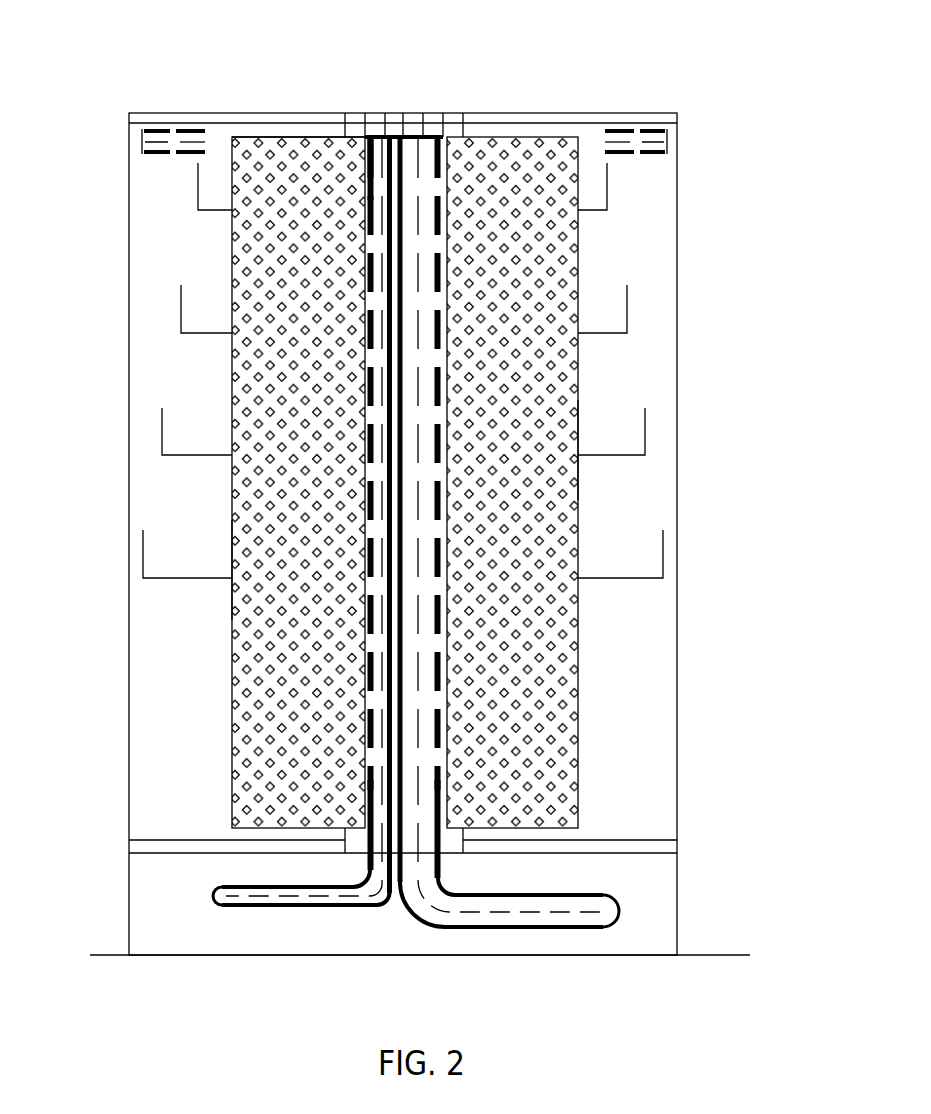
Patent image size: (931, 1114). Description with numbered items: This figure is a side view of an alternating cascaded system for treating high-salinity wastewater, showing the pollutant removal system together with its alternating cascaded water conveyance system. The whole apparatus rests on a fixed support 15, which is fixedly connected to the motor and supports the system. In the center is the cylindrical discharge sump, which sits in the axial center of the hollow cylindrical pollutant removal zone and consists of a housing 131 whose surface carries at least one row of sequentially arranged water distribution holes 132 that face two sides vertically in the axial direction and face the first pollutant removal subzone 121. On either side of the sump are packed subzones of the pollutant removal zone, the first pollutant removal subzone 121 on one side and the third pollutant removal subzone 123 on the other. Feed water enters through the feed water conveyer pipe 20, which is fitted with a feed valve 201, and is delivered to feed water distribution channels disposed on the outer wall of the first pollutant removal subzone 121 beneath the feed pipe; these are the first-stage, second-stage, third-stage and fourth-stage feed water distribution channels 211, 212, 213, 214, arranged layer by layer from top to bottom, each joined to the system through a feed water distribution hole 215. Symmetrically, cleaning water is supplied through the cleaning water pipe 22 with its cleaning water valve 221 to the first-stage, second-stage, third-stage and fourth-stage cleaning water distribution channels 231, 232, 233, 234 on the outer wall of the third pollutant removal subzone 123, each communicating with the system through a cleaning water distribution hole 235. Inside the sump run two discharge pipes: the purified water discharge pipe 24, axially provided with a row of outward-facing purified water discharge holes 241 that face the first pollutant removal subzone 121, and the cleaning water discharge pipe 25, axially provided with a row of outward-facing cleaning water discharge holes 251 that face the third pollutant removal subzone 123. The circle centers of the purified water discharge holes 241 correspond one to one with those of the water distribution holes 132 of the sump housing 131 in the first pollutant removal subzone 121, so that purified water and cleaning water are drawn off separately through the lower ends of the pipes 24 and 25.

The fixed support 15 is at (677, 953).
The feed water conveyer pipe 20 is at (628, 130).
The feed valve 201 is at (657, 155).
The first-stage feed water distribution channel 211 is at (607, 182).
The second-stage feed water distribution channel 212 is at (627, 307).
The third-stage feed water distribution channel 213 is at (643, 433).
The fourth-stage feed water distribution channel 214 is at (665, 535).
The feed water distribution hole 215 is at (573, 457).
The cleaning water pipe 22 is at (155, 155).
The cleaning water valve 221 is at (178, 145).
The first-stage cleaning water distribution channel 231 is at (197, 187).
The second-stage cleaning water distribution channel 232 is at (181, 313).
The third-stage cleaning water distribution channel 233 is at (162, 422).
The fourth-stage cleaning water distribution channel 234 is at (143, 558).
The cleaning water distribution hole 235 is at (230, 575).
The purified water discharge pipe 24 is at (425, 137).
The purified water discharge hole 241 is at (433, 772).
The cleaning water discharge pipe 25 is at (368, 770).
The cleaning water discharge hole 251 is at (370, 717).
The first pollutant removal subzone 121 is at (513, 690).
The third pollutant removal subzone 123 is at (233, 625).
The housing of the discharge sump 131 is at (365, 190).
The water distribution hole of the discharge sump 132 is at (307, 137).